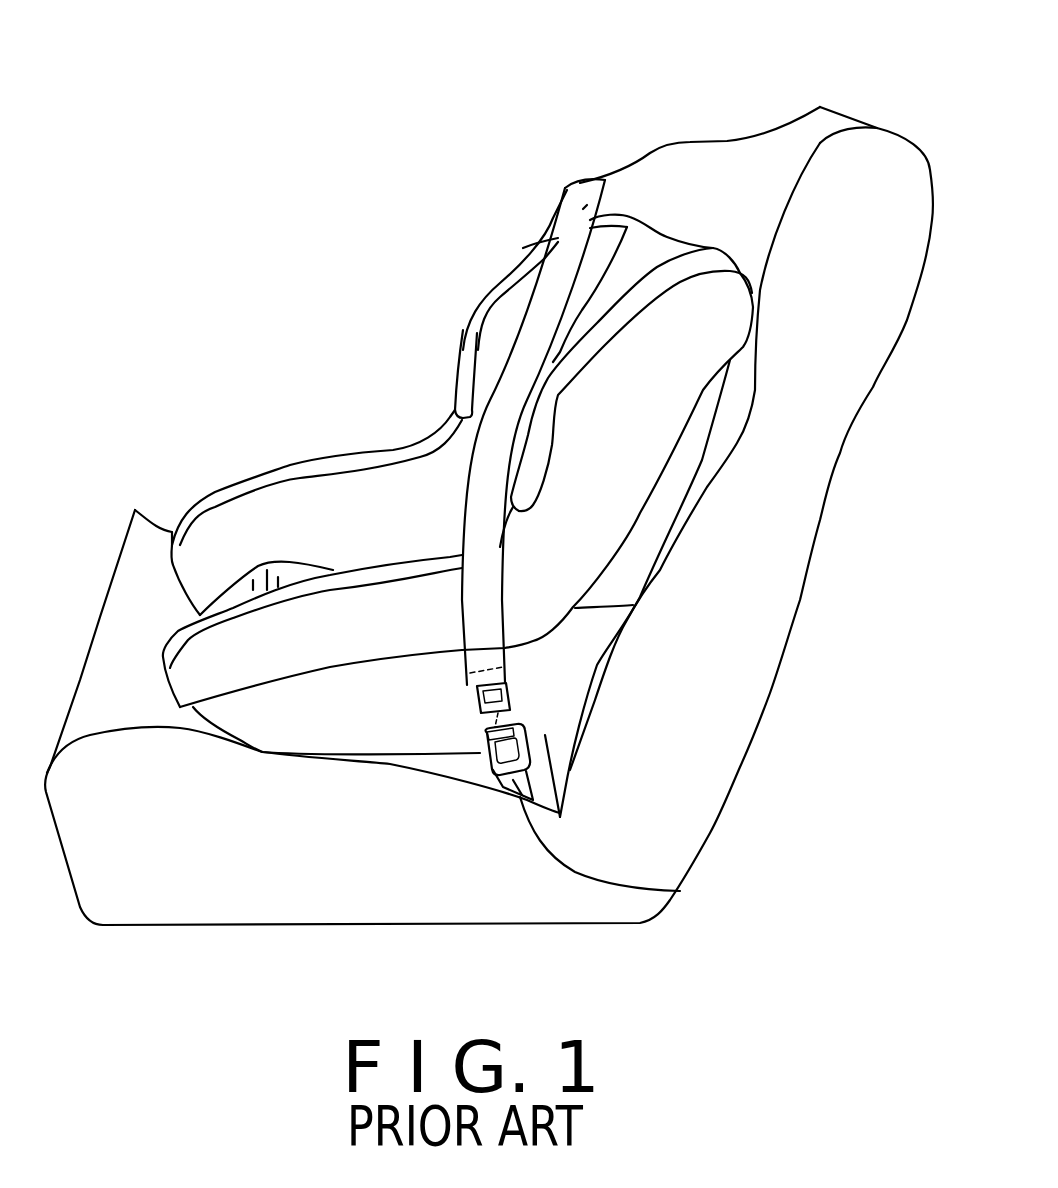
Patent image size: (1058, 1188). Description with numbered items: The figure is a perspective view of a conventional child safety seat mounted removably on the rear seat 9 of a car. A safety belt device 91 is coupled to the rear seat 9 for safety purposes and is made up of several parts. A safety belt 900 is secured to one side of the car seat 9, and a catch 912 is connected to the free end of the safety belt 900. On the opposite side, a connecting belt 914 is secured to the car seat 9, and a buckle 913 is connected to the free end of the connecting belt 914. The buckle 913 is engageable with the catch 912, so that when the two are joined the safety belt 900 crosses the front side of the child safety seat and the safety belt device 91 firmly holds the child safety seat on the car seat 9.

The rear seat 9 is at (875, 168).
The safety belt device 91 is at (567, 173).
The safety belt 900 is at (585, 208).
The catch 912 is at (508, 690).
The buckle 913 is at (522, 733).
The connecting belt 914 is at (660, 893).